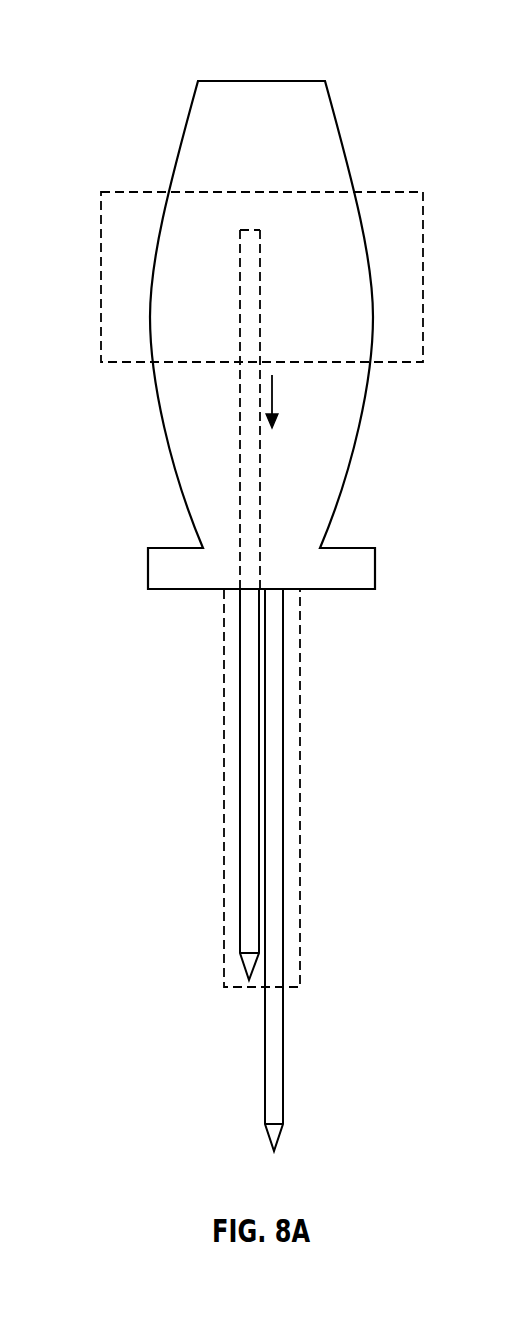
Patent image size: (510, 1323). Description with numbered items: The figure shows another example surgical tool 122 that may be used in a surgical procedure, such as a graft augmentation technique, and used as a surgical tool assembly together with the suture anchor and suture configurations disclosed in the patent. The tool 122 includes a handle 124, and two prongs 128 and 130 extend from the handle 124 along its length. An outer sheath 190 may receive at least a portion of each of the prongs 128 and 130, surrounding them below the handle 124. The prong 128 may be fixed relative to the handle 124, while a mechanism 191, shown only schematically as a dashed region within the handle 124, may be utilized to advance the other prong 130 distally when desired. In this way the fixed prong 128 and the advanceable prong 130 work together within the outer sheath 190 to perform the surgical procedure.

The surgical tool 122 is at (131, 26).
The handle 124 is at (333, 445).
The prong 128 is at (273, 679).
The prong 130 is at (248, 710).
The outer sheath 190 is at (300, 724).
The mechanism 191 is at (100, 327).